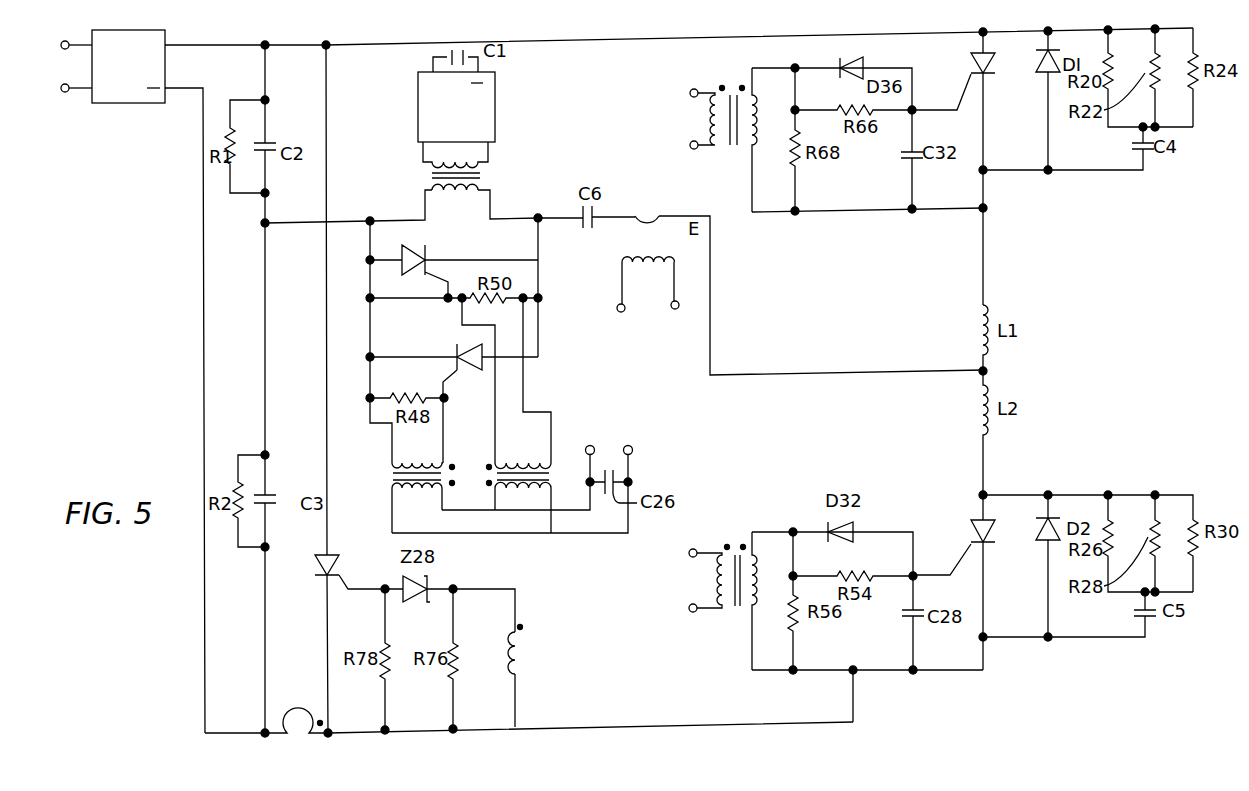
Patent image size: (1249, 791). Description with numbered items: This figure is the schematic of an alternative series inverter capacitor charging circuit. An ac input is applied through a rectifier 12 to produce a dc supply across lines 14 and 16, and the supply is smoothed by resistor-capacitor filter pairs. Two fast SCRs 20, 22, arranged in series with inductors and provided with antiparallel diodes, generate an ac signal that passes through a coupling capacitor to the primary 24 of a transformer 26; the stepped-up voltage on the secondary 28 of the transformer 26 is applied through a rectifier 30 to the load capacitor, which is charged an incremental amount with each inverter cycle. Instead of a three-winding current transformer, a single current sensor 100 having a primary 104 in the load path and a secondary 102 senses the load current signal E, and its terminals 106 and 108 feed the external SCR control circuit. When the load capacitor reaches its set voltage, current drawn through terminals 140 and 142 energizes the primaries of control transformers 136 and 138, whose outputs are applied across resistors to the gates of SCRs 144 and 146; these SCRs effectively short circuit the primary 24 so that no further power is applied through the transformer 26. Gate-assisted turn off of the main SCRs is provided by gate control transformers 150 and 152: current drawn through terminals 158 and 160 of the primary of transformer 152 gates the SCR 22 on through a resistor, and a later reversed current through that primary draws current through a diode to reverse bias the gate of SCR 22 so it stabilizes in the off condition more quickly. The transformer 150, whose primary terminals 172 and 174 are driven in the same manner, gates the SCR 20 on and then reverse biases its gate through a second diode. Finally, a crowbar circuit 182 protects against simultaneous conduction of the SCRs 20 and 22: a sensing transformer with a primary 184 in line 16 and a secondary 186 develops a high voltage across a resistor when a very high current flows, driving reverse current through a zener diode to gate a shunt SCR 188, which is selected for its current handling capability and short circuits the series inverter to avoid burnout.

The rectifier 12 is at (122, 103).
The line 14 is at (381, 44).
The line 16 is at (206, 674).
The SCR 20 is at (986, 58).
The SCR 22 is at (990, 528).
The primary 24 is at (497, 185).
The transformer 26 is at (506, 176).
The secondary 28 is at (496, 158).
The rectifier 30 is at (497, 91).
The current sensor 100 is at (638, 292).
The secondary 102 is at (619, 265).
The primary 104 is at (646, 214).
The terminal 106 is at (618, 312).
The terminal 108 is at (678, 309).
The control transformer 136 is at (391, 477).
The control transformer 138 is at (497, 477).
The terminal 140 is at (628, 445).
The terminal 142 is at (590, 445).
The SCR 144 is at (472, 370).
The SCR 146 is at (414, 245).
The gate control transformer 150 is at (735, 81).
The gate control transformer 152 is at (738, 613).
The terminal 158 is at (688, 553).
The terminal 160 is at (689, 610).
The drive input terminal 172 is at (689, 91).
The drive input terminal 174 is at (690, 148).
The crowbar circuit 182 is at (513, 640).
The primary 184 is at (298, 728).
The secondary 186 is at (516, 660).
The shunt SCR 188 is at (338, 566).